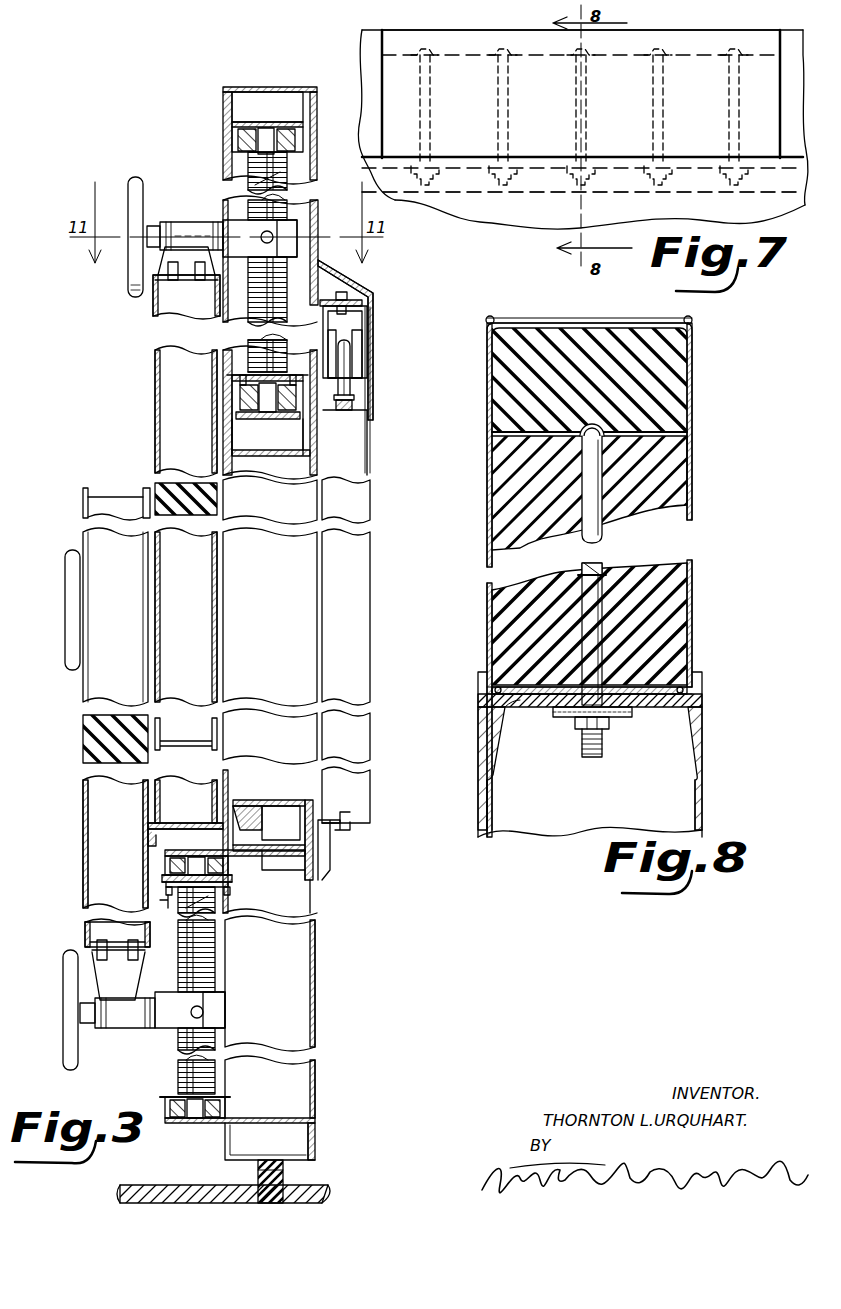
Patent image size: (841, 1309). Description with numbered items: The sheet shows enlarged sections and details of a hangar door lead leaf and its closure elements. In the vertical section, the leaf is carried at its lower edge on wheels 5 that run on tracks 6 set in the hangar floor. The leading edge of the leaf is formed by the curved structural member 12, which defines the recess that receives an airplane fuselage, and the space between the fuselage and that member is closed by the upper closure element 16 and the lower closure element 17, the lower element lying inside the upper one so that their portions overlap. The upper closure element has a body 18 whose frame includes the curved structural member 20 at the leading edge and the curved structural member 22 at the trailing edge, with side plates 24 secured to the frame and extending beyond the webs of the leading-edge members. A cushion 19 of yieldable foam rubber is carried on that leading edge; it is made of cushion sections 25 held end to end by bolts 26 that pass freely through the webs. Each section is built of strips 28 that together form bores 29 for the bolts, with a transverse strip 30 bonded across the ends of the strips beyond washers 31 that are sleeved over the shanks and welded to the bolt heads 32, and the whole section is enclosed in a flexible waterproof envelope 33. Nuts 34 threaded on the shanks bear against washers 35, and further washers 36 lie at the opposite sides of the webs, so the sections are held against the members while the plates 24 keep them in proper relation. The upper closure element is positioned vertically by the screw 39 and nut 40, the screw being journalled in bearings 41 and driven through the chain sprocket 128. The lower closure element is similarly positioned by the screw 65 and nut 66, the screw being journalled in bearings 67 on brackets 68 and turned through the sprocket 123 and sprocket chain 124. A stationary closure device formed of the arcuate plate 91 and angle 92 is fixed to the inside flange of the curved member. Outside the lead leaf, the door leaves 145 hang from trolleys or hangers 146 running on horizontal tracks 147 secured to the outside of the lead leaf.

In FIG. 3, the wheels 5 is at (285, 1179).
In FIG. 3, the tracks 6 is at (258, 1191).
In FIG. 3, the curved structural member 12 is at (250, 458).
In FIG. 3, the upper closure element 16 is at (163, 420).
In FIG. 3, the lower closure element 17 is at (114, 497).
In FIG. 3, the body 18 is at (155, 381).
In FIG. 7, the cushion 19 is at (463, 43).
In FIG. 3, the cushion 19 is at (194, 513).
In FIG. 7, the curved structural member 20 is at (790, 197).
In FIG. 8, the curved structural member 20 is at (688, 736).
In FIG. 3, the curved structural member 22 is at (172, 285).
In FIG. 7, the side plates 24 is at (480, 200).
In FIG. 8, the side plates 24 is at (487, 816).
In FIG. 3, the side plates 24 is at (170, 363).
In FIG. 7, the cushion sections 25 is at (697, 47).
In FIG. 7, the bolts 26 is at (421, 126).
In FIG. 8, the bolts 26 is at (603, 528).
In FIG. 8, the strips 28 is at (603, 575).
In FIG. 8, the bores 29 is at (583, 574).
In FIG. 8, the strip 30 is at (695, 352).
In FIG. 8, the washers 31 is at (638, 438).
In FIG. 8, the heads 32 is at (605, 432).
In FIG. 8, the envelope 33 is at (695, 509).
In FIG. 8, the nuts 34 is at (607, 723).
In FIG. 8, the washers 35 is at (565, 717).
In FIG. 8, the washers 36 is at (633, 690).
In FIG. 3, the screw 39 is at (290, 205).
In FIG. 3, the nut 40 is at (297, 231).
In FIG. 3, the bearings 41 is at (290, 129).
In FIG. 3, the screw 65 is at (217, 969).
In FIG. 3, the nut 66 is at (225, 1009).
In FIG. 3, the bearings 67 is at (168, 862).
In FIG. 3, the brackets 68 is at (280, 850).
In FIG. 3, the arcuate plate 91 is at (180, 828).
In FIG. 3, the angle 92 is at (156, 841).
In FIG. 3, the sprocket 123 is at (170, 901).
In FIG. 3, the sprocket chain 124 is at (232, 880).
In FIG. 3, the chain sprocket 128 is at (250, 357).
In FIG. 3, the door leaves 145 is at (370, 505).
In FIG. 3, the trolleys or hangers 146 is at (366, 346).
In FIG. 3, the horizontal tracks 147 is at (352, 365).